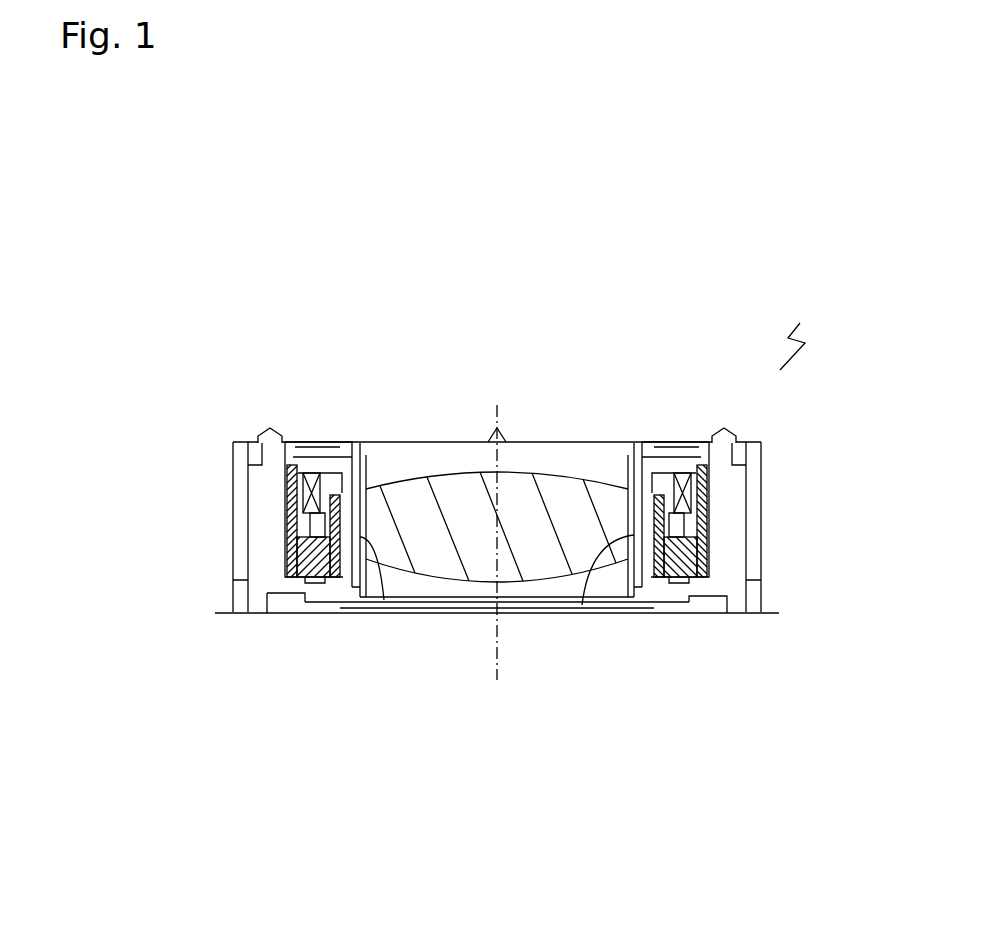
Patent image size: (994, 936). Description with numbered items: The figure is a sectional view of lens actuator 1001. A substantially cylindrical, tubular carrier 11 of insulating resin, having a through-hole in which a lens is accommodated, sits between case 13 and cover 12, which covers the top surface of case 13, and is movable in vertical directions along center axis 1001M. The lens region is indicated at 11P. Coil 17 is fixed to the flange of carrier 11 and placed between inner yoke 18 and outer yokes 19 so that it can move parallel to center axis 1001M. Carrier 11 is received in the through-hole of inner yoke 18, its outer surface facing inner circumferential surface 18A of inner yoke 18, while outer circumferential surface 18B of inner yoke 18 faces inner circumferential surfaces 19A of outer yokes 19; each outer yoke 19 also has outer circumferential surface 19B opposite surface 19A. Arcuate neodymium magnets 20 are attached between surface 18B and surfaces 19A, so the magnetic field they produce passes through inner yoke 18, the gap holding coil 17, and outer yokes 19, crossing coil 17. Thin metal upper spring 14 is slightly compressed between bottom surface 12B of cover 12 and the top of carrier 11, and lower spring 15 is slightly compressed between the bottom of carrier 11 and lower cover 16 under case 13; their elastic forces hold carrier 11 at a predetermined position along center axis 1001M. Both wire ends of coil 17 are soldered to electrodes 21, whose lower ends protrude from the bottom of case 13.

The lens actuator 1001 is at (814, 336).
The center axis 1001M is at (500, 400).
The carrier 11 is at (358, 455).
The lens 11P is at (437, 458).
The cover 12 is at (757, 460).
The bottom surface of cover 12B is at (250, 465).
The case 13 is at (737, 610).
The upper spring 14 is at (312, 452).
The lower spring 15 is at (320, 613).
The lower cover 16 is at (280, 610).
The coil 17 is at (687, 470).
The inner yoke 18 is at (335, 605).
The inner circumferential surface of inner yoke 18A is at (384, 600).
The outer circumferential surface of inner yoke 18B is at (298, 590).
The outer yoke 19 is at (290, 470).
The inner circumferential surface of outer yoke 19A is at (305, 527).
The outer circumferential surface of outer yoke 19B is at (330, 545).
The magnet 20 is at (700, 560).
The electrode 21 is at (215, 613).